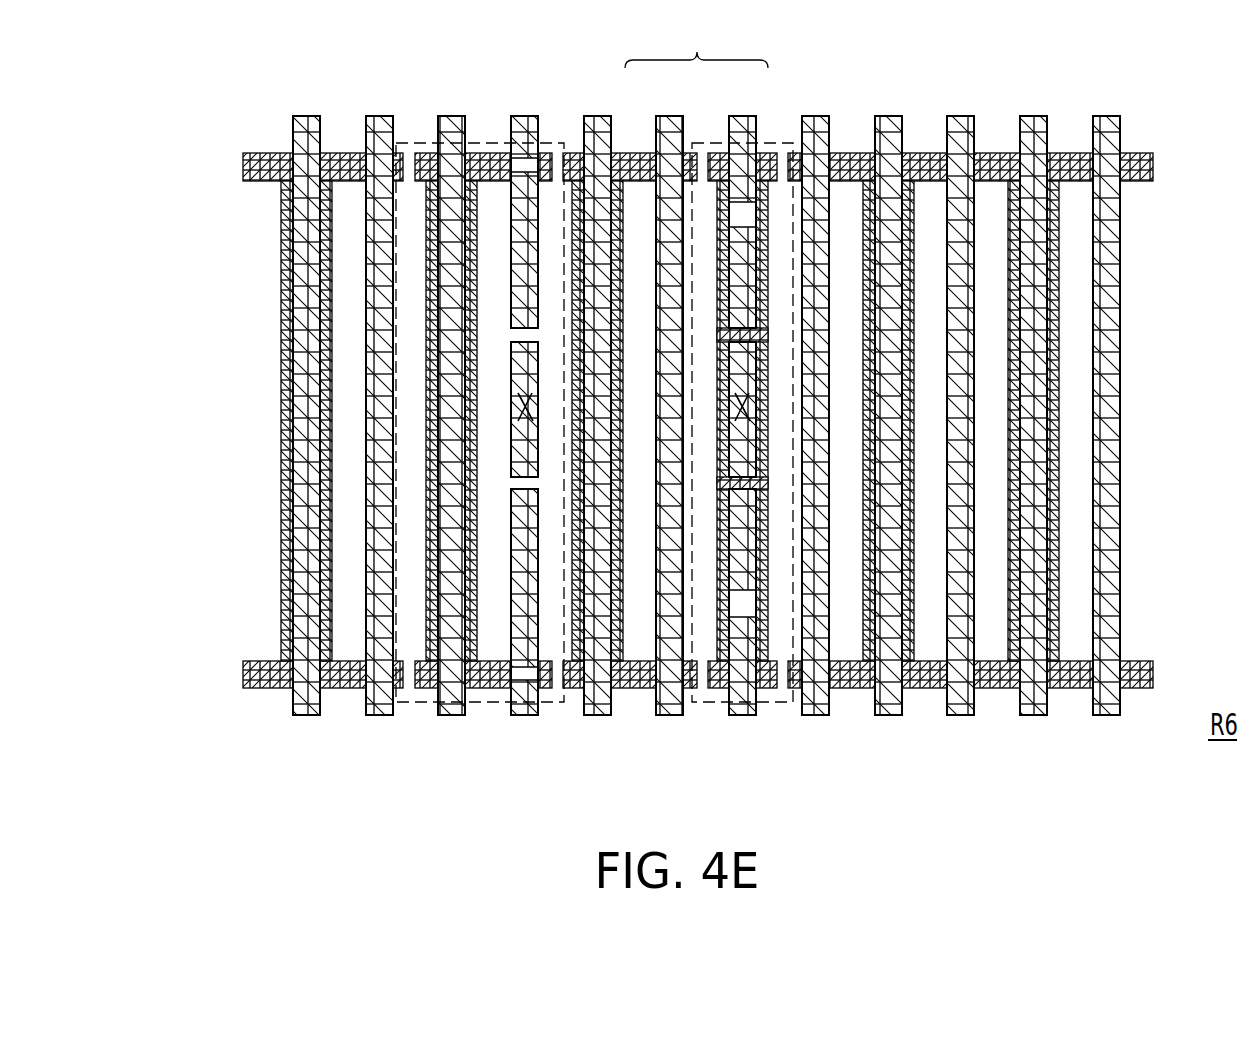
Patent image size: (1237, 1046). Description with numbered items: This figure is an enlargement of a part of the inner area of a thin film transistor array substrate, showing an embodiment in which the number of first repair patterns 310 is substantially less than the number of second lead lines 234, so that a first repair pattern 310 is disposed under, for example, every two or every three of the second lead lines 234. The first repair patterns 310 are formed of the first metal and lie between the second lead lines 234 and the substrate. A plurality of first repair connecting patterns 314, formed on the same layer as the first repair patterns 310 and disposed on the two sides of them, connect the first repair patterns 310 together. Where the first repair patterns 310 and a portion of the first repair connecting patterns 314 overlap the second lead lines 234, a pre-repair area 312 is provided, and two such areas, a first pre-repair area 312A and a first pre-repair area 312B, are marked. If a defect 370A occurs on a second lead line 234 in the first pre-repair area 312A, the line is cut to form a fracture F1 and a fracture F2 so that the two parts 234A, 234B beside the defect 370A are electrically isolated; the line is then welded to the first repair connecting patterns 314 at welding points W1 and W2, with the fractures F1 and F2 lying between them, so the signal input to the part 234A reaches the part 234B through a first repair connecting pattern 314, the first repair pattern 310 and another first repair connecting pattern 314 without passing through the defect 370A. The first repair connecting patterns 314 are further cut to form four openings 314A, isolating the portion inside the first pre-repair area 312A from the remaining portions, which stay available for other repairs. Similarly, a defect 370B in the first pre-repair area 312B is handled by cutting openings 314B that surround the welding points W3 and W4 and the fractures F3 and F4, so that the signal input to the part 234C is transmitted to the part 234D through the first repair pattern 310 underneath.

The second lead lines 234 is at (312, 715).
The part of second lead line 234A is at (526, 117).
The part of second lead line 234B is at (522, 714).
The part of second lead line 234C is at (745, 120).
The part of second lead line 234D is at (742, 715).
The first repair patterns 310 is at (767, 197).
The pre-repair area 312 is at (696, 43).
The first pre-repair area 312A is at (565, 129).
The first pre-repair area 312B is at (702, 137).
The first repair connecting patterns 314 is at (243, 166).
The openings 314A is at (409, 157).
The openings 314B is at (702, 183).
The defect 370A is at (510, 415).
The defect 370B is at (756, 412).
The fracture F1 is at (513, 333).
The fracture F2 is at (510, 483).
The fracture F3 is at (756, 333).
The fracture F4 is at (756, 485).
The welding point W1 is at (512, 163).
The welding point W2 is at (511, 675).
The welding point W3 is at (746, 214).
The welding point W4 is at (747, 603).